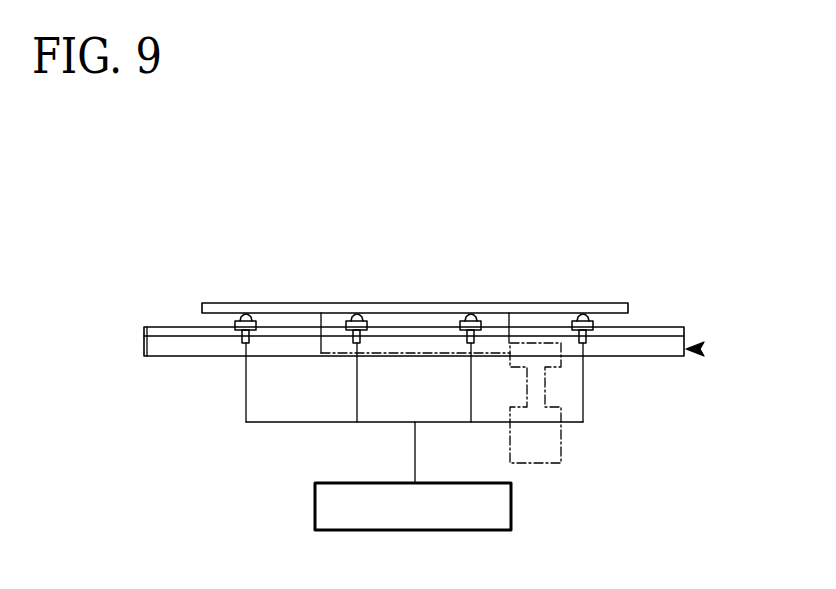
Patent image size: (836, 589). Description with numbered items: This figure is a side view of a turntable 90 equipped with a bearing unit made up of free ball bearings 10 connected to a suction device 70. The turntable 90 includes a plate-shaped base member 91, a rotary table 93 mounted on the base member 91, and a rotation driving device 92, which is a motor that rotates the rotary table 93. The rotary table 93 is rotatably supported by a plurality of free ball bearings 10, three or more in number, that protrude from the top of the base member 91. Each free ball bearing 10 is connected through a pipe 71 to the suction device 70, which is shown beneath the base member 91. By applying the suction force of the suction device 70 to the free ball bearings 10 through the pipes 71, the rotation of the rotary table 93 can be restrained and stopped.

The free ball bearing 10 is at (257, 323).
The suction device 70 is at (511, 505).
The pipe 71 is at (246, 383).
The turntable 90 is at (702, 349).
The base member 91 is at (684, 334).
The rotation driving device 92 is at (561, 447).
The rotary table 93 is at (563, 303).